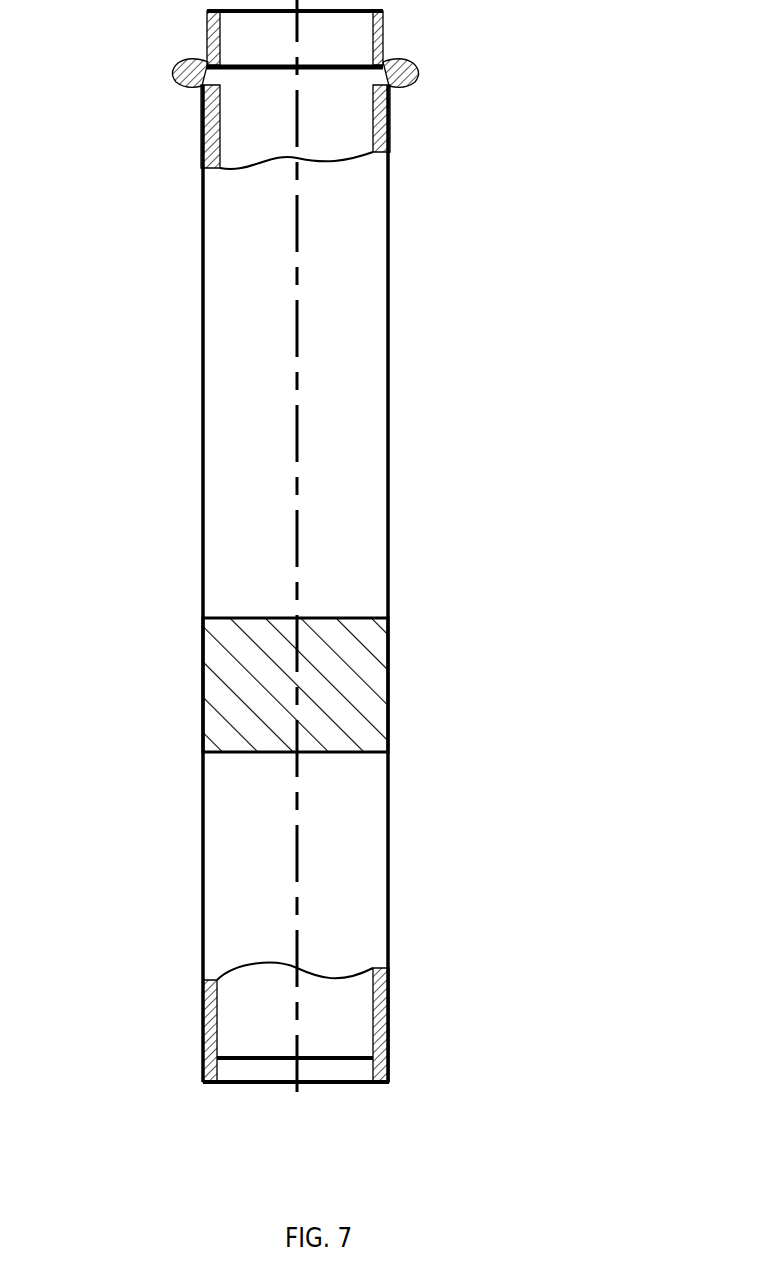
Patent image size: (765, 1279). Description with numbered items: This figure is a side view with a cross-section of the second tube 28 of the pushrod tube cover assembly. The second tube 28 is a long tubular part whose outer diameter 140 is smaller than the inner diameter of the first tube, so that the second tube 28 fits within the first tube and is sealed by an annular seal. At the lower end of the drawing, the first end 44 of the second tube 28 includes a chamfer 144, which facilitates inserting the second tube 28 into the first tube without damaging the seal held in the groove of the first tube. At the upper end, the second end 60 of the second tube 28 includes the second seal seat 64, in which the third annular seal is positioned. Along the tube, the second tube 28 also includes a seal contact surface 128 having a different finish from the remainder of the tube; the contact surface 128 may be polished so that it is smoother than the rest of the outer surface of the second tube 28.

The second tube 28 is at (373, 573).
The first end 44 is at (187, 1050).
The second end 60 is at (395, 31).
The second seal seat 64 is at (190, 64).
The seal contact surface 128 is at (373, 667).
The outer diameter 140 is at (200, 1079).
The chamfer 144 is at (388, 1040).